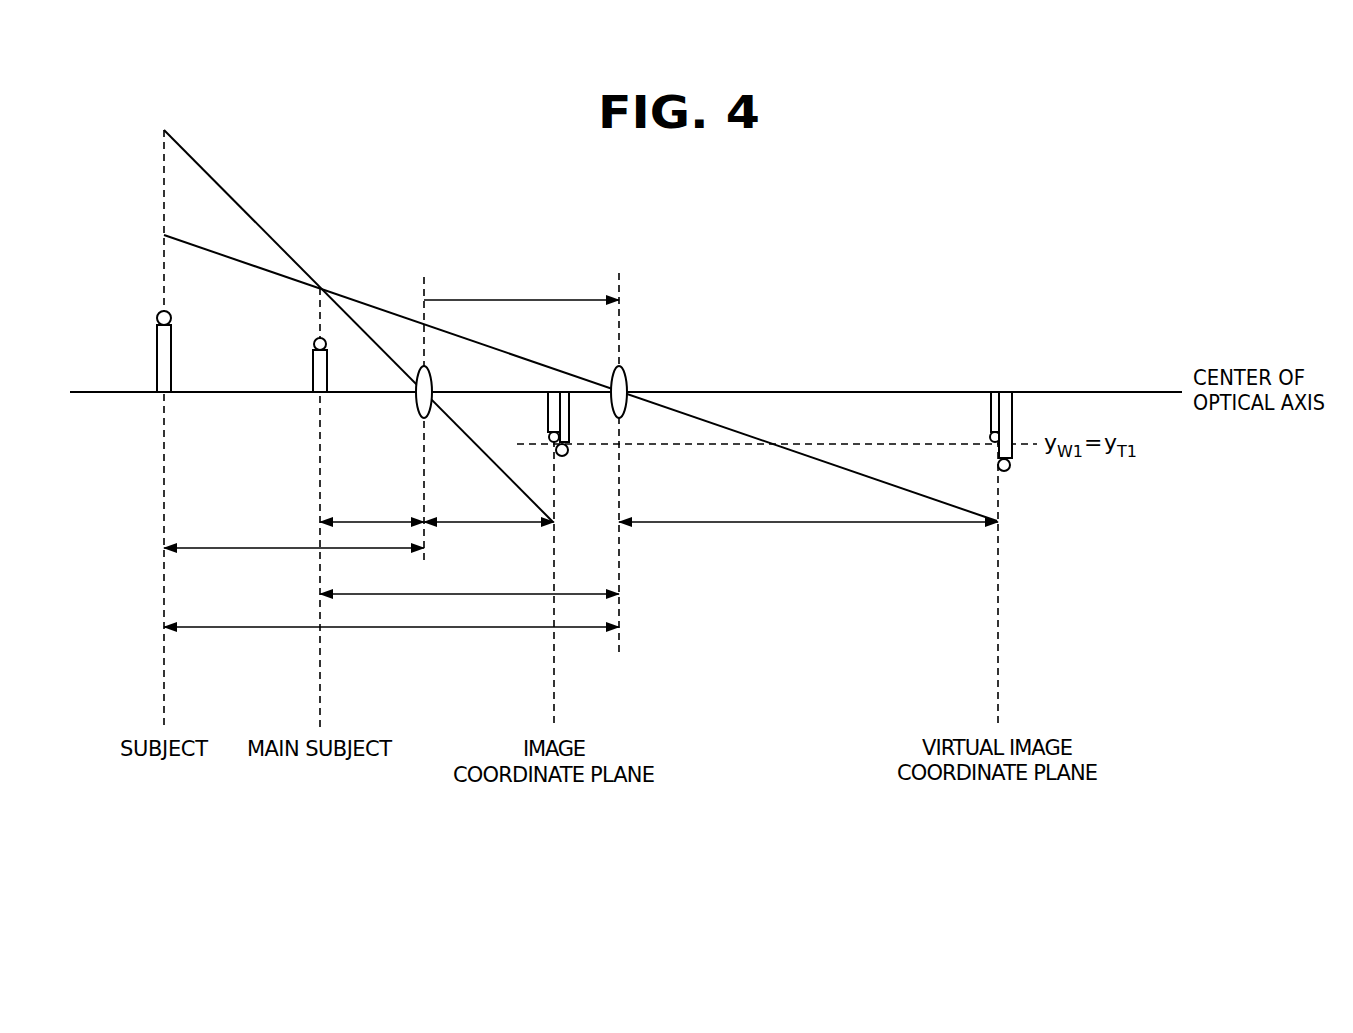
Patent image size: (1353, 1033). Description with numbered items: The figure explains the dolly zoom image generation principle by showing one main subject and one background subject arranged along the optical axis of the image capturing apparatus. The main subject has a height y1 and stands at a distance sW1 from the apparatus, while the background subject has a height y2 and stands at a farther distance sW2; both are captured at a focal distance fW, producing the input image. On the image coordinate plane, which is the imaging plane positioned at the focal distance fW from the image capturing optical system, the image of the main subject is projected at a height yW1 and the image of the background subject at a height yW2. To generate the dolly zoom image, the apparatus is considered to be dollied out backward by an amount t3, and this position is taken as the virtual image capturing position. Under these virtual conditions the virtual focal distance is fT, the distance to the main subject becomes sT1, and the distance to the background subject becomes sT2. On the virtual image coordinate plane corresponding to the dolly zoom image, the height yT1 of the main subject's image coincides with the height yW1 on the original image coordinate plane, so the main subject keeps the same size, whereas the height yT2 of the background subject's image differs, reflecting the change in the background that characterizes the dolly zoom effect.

The height of main subject y1 is at (306, 367).
The height of background subject y2 is at (149, 353).
The focal distance fW is at (485, 434).
The virtual focal distance fT is at (804, 434).
The dolly-out amount t3 is at (521, 261).
The height of image of main subject on image coordinate plane yW1 is at (531, 417).
The height of image of background subject on image coordinate plane yW2 is at (585, 424).
The height of image of main subject on virtual image coordinate plane yT1 is at (976, 417).
The height of image of background subject on virtual image coordinate plane yT2 is at (1027, 431).
The distance to main subject sW1 is at (372, 510).
The distance to background subject sW2 is at (294, 537).
The virtual distance to main subject sT1 is at (469, 582).
The virtual distance to background subject sT2 is at (391, 613).